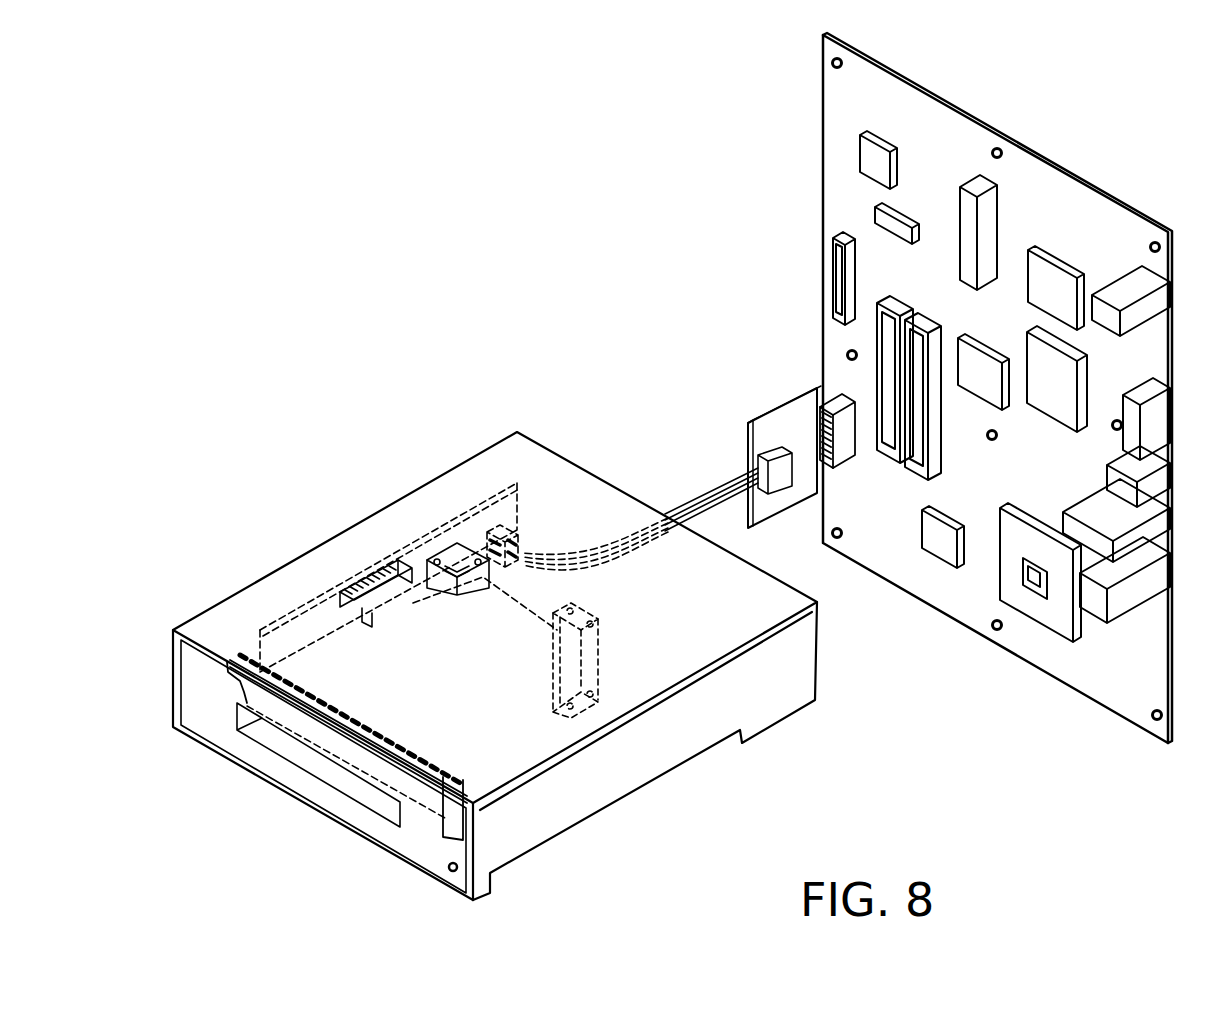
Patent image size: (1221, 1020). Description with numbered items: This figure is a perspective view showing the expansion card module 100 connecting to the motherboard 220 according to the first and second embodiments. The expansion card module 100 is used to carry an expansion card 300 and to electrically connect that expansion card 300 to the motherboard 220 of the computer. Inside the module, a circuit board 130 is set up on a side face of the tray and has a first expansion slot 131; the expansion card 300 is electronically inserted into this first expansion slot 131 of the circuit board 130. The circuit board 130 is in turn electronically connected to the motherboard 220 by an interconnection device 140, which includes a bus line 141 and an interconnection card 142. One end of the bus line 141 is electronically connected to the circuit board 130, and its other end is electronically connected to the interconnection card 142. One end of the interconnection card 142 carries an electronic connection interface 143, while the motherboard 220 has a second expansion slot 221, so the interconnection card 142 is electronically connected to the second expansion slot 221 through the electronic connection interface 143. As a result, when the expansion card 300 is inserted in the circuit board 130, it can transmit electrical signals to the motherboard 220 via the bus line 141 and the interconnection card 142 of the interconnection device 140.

The expansion card module 100 is at (272, 829).
The circuit board 130 is at (442, 522).
The first expansion slot 131 is at (367, 602).
The interconnection device 140 is at (818, 346).
The bus line 141 is at (703, 508).
The interconnection card 142 is at (767, 427).
The electronic connection interface 143 is at (813, 427).
The motherboard 220 is at (833, 124).
The second expansion slot 221 is at (843, 447).
The expansion card 300 is at (343, 667).